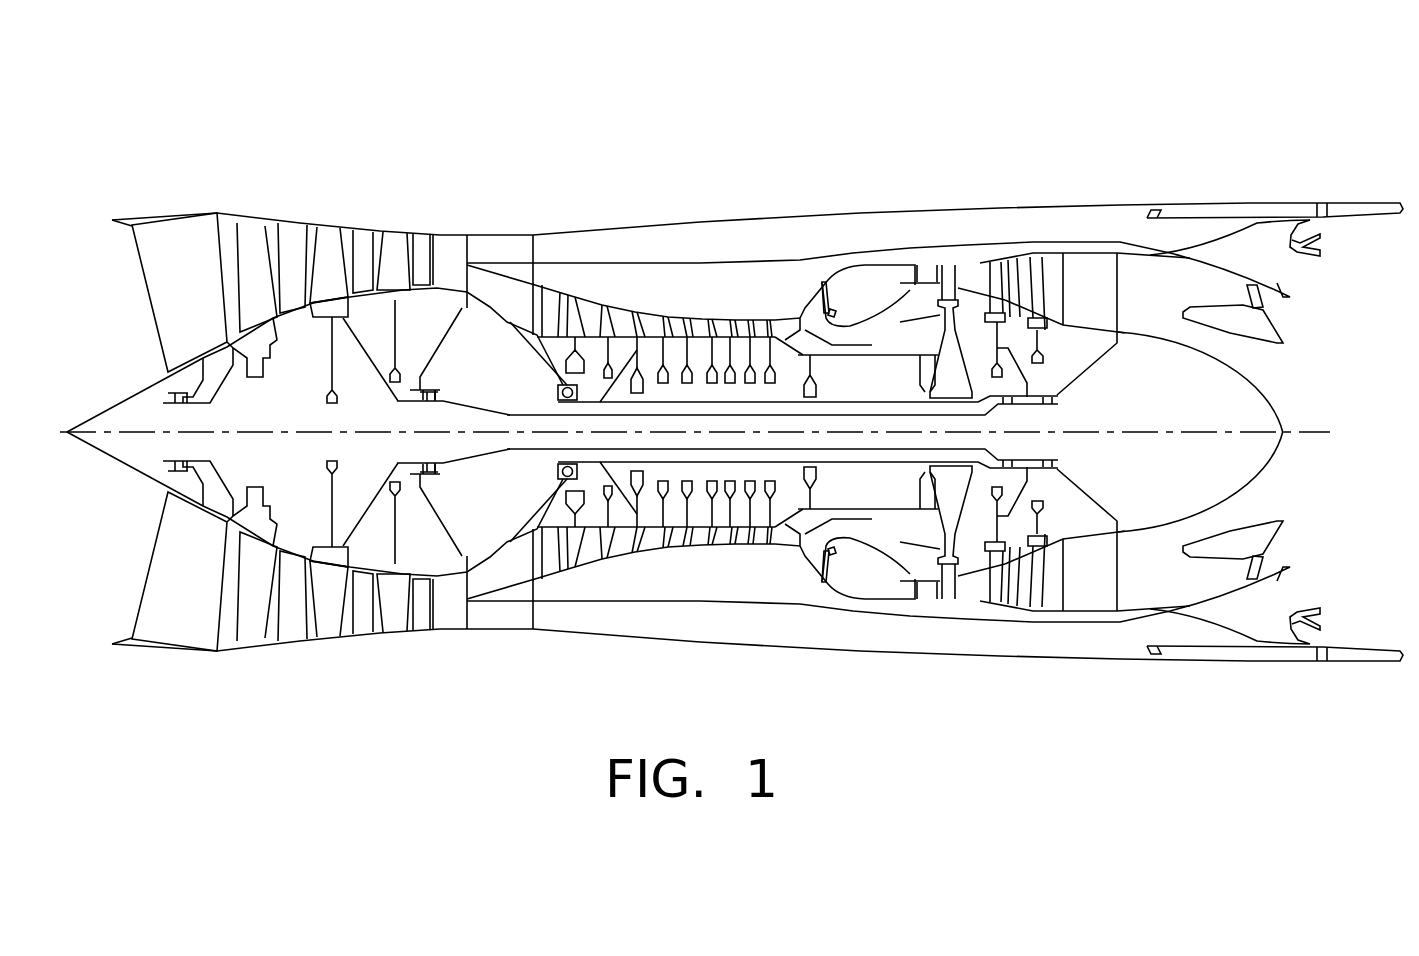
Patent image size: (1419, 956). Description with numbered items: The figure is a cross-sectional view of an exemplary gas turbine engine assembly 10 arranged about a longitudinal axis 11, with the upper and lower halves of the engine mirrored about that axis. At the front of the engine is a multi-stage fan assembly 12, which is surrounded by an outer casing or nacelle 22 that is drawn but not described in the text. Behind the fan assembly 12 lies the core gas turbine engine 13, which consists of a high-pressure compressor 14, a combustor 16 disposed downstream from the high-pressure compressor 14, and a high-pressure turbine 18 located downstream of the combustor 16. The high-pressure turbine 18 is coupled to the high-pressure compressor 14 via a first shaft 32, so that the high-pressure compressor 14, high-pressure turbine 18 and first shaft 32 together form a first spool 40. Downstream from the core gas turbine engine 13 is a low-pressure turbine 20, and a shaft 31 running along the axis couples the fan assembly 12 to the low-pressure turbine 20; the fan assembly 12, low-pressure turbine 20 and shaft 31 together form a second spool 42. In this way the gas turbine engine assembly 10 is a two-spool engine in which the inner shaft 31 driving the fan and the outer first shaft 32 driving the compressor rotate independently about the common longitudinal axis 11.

The gas turbine engine assembly 10 is at (729, 365).
The longitudinal axis 11 is at (1107, 432).
The fan assembly 12 is at (152, 323).
The core gas turbine engine 13 is at (953, 242).
The high-pressure compressor 14 is at (653, 310).
The combustor 16 is at (855, 298).
The high-pressure turbine 18 is at (972, 262).
The low-pressure turbine 20 is at (1002, 260).
The nacelle 22 is at (292, 221).
The shaft 31 is at (532, 449).
The first shaft 32 is at (877, 357).
The first spool 40 is at (823, 357).
The second spool 42 is at (788, 450).